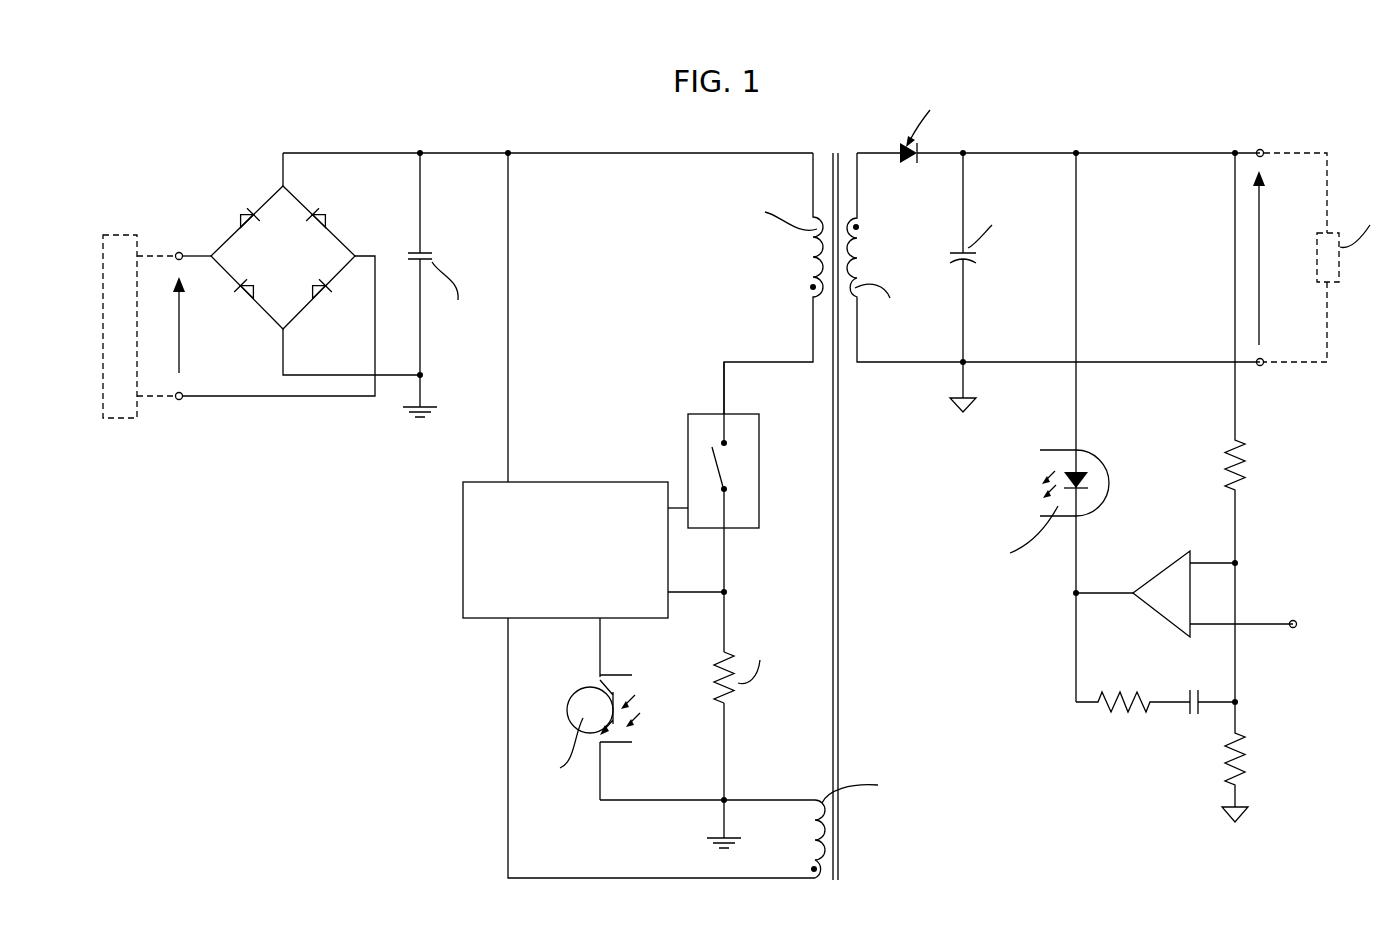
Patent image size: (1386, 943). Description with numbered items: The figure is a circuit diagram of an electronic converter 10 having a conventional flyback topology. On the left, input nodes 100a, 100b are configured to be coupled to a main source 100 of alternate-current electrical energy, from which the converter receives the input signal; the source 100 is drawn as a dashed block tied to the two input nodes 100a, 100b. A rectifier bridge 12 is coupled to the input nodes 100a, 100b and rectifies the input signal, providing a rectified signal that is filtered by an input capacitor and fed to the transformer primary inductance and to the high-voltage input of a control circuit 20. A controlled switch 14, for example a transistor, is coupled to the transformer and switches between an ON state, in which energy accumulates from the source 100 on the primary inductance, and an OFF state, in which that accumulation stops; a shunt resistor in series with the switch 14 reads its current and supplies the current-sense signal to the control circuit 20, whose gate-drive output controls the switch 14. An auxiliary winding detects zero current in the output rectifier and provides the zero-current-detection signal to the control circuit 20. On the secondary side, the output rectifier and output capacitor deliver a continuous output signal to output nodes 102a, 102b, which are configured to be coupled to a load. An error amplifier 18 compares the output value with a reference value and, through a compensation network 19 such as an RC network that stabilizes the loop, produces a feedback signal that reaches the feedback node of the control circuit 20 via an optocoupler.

The electronic converter 10 is at (363, 591).
The rectifier bridge 12 is at (269, 189).
The controlled switch 14 is at (725, 468).
The error amplifier 18 is at (1160, 582).
The compensation network 19 is at (1218, 727).
The control circuit 20 is at (578, 492).
The source 100 is at (117, 234).
The input node 100a is at (178, 251).
The input node 100b is at (181, 400).
The output node 102a is at (1261, 148).
The output node 102b is at (1262, 366).